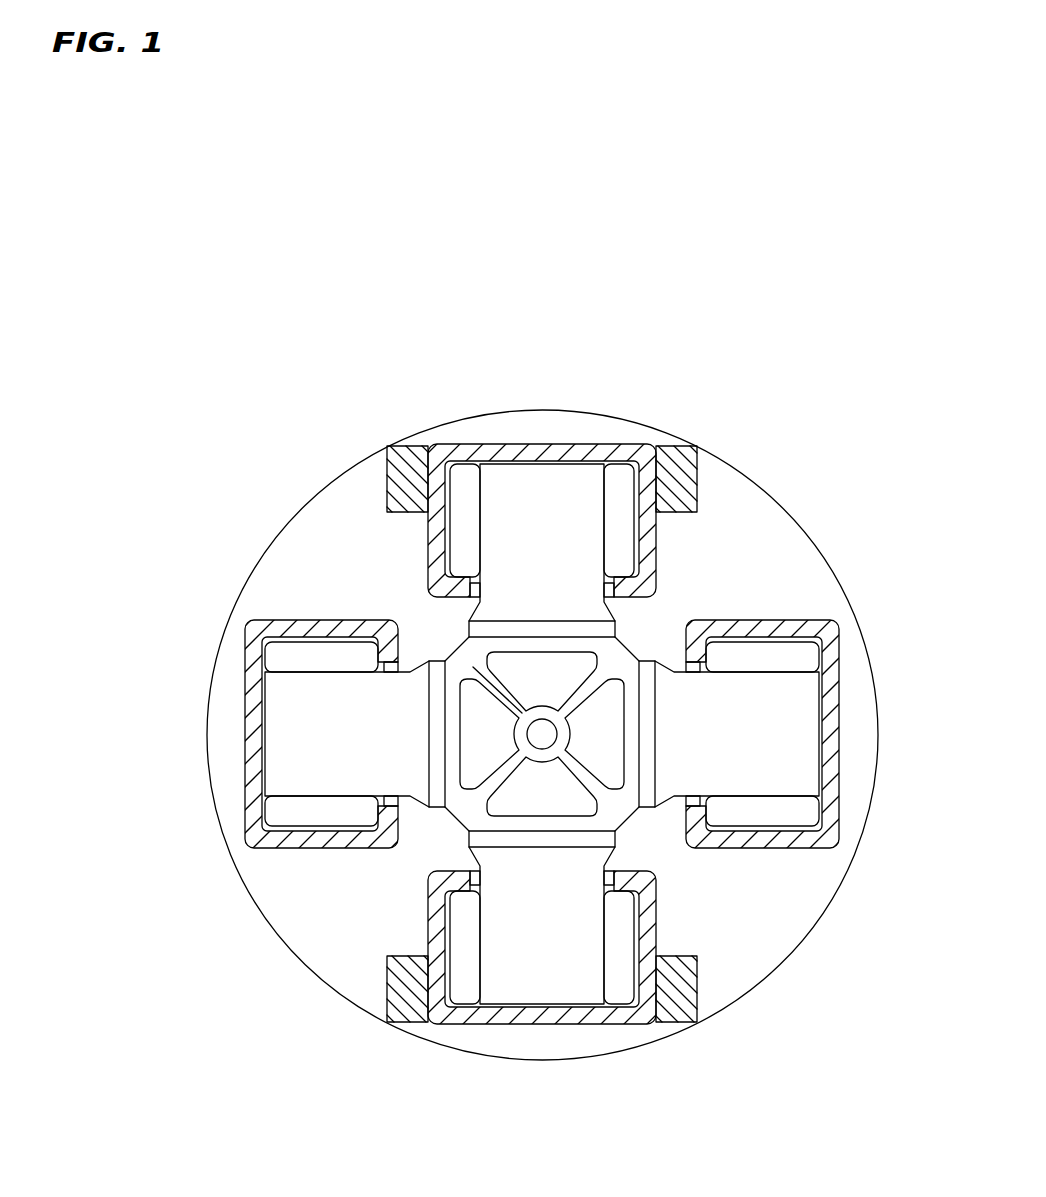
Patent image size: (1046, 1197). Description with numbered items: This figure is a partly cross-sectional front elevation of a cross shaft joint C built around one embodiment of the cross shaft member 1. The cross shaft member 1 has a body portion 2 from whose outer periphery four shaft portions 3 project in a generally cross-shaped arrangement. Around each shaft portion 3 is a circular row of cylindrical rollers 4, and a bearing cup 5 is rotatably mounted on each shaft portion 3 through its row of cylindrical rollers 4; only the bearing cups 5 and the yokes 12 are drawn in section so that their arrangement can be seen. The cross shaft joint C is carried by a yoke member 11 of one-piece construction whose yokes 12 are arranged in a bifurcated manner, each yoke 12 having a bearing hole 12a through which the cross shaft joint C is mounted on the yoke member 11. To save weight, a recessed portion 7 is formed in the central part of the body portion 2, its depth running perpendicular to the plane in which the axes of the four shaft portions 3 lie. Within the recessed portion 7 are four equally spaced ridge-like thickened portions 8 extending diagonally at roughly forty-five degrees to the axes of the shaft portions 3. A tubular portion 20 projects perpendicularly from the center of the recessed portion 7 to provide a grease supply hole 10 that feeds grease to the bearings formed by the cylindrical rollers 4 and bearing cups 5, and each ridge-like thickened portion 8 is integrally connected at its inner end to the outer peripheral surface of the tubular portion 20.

The cross shaft joint C is at (534, 711).
The cross shaft member 1 is at (652, 626).
The body portion 2 is at (529, 735).
The shaft portion 3 is at (543, 480).
The cylindrical roller 4 is at (316, 655).
The bearing cup 5 is at (650, 563).
The recessed portion 7 is at (616, 740).
The ridge-like thickened portion 8 is at (500, 777).
The grease supply hole 10 is at (553, 746).
The yoke member 11 is at (753, 466).
The yoke 12 is at (402, 466).
The bearing hole 12a is at (650, 442).
The tubular portion 20 is at (473, 667).